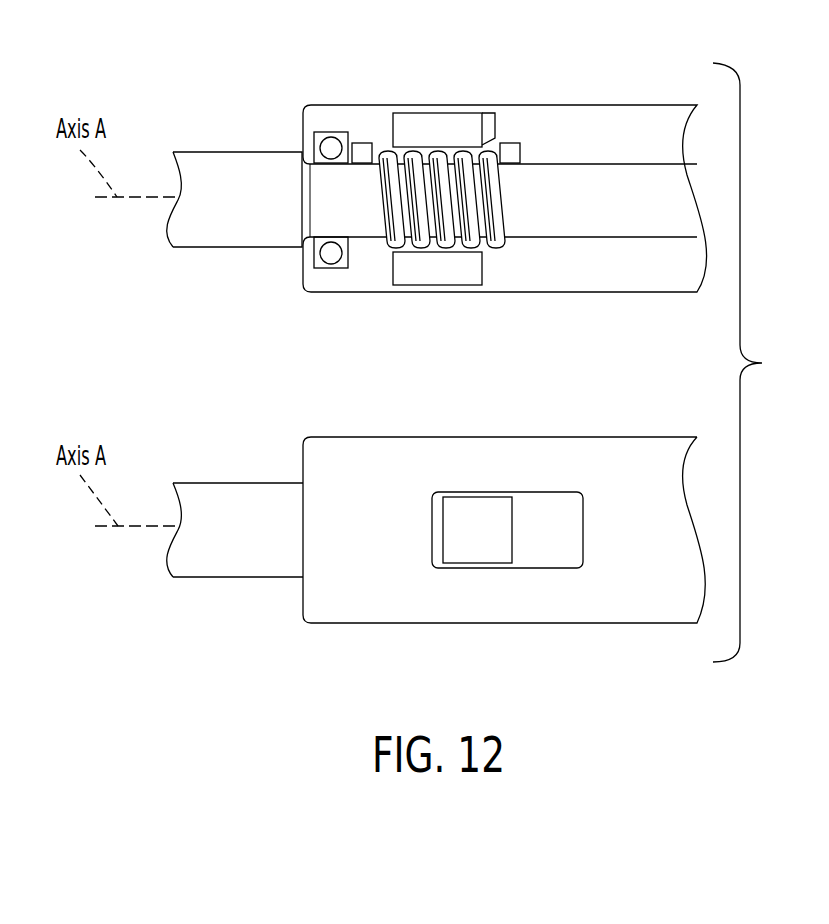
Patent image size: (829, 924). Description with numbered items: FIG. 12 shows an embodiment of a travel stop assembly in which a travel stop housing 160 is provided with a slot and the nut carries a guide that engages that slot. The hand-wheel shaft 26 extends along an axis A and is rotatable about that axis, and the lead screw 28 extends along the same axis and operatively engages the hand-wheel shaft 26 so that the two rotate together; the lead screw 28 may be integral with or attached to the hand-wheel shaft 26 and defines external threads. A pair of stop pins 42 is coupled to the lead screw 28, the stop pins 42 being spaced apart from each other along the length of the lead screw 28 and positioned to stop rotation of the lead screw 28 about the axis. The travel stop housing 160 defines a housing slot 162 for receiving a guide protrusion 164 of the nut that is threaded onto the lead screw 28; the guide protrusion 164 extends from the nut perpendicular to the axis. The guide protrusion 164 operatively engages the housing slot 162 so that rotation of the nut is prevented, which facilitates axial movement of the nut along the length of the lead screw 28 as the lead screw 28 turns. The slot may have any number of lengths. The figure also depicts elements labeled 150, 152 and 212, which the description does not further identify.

The lead screw 28 is at (580, 163).
The stop pins 42 is at (360, 157).
The sensor 150 is at (438, 124).
The sensor connector 152 is at (487, 120).
The fastener 212 is at (508, 154).
The hand-wheel shaft 26 is at (505, 250).
The travel stop housing 160 is at (612, 437).
The housing slot 162 is at (585, 532).
The guide protrusion 164 is at (470, 513).